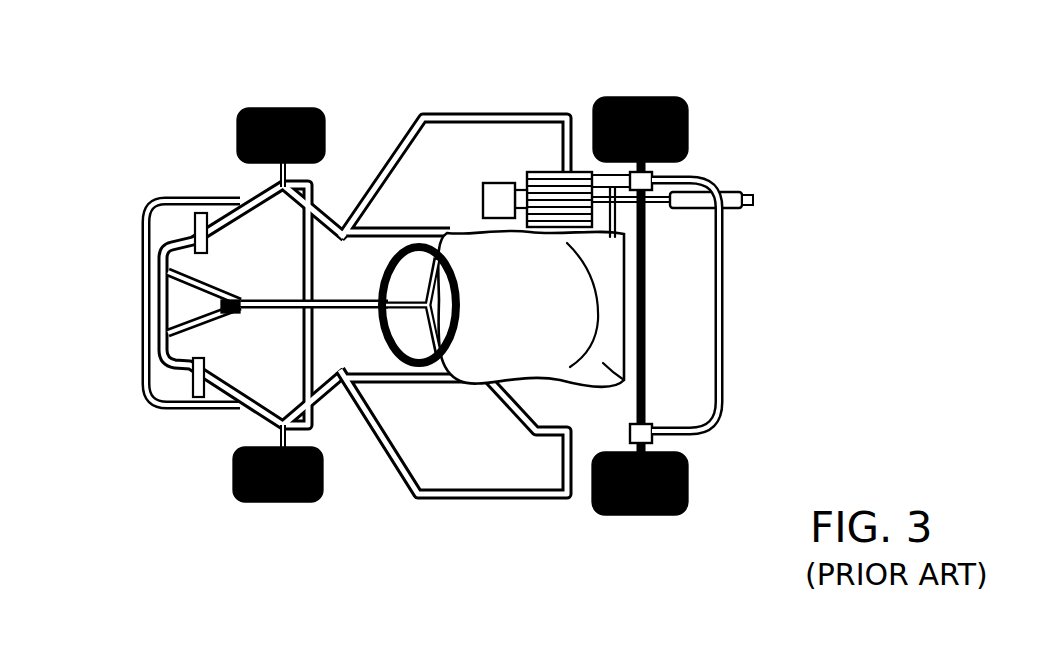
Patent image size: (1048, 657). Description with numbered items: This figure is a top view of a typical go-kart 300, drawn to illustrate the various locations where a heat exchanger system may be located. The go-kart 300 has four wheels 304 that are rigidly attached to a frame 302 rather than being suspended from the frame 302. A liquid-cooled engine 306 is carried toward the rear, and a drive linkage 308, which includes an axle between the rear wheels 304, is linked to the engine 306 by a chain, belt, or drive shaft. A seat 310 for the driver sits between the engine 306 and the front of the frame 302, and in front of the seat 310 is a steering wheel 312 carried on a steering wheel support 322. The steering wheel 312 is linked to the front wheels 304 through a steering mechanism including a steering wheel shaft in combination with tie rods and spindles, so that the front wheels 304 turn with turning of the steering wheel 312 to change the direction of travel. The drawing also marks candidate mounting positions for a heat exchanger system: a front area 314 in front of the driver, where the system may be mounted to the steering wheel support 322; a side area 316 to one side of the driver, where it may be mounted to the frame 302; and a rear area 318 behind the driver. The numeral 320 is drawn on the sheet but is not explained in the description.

The go-kart 300 is at (543, 54).
The frame 302 is at (341, 215).
The wheels 304 is at (249, 107).
The liquid-cooled engine 306 is at (543, 172).
The drive linkage 308 is at (647, 230).
The seat 310 is at (468, 360).
The steering wheel 312 is at (378, 328).
The front area 314 is at (338, 335).
The side area 316 is at (523, 468).
The rear area 318 is at (679, 318).
The seat bracket 320 is at (603, 363).
The steering wheel support 322 is at (408, 650).